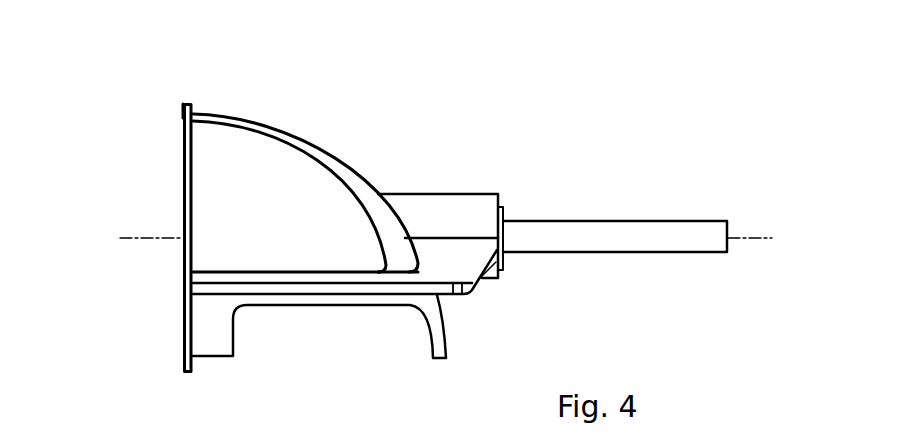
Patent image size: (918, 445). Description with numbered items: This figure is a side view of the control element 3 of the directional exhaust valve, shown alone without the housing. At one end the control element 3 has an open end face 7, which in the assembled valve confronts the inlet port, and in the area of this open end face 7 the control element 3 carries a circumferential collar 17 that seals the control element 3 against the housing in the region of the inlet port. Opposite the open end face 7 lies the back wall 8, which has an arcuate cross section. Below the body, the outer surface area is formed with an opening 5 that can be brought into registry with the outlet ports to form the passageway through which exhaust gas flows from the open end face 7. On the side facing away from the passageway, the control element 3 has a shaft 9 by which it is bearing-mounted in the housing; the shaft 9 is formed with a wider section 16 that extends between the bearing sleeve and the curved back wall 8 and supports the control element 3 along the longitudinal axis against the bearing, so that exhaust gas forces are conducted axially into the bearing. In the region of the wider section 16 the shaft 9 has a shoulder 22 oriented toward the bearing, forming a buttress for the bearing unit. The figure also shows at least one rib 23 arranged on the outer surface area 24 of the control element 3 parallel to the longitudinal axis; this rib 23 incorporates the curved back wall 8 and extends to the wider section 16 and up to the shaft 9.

The control element 3 is at (474, 108).
The opening 5 is at (337, 320).
The open end face 7 is at (180, 178).
The back wall 8 is at (343, 178).
The shaft 9 is at (675, 258).
The wider section 16 is at (465, 211).
The circumferential collar 17 is at (183, 110).
The shoulder 22 is at (507, 210).
The rib 23 is at (443, 253).
The outer surface area 24 is at (258, 180).